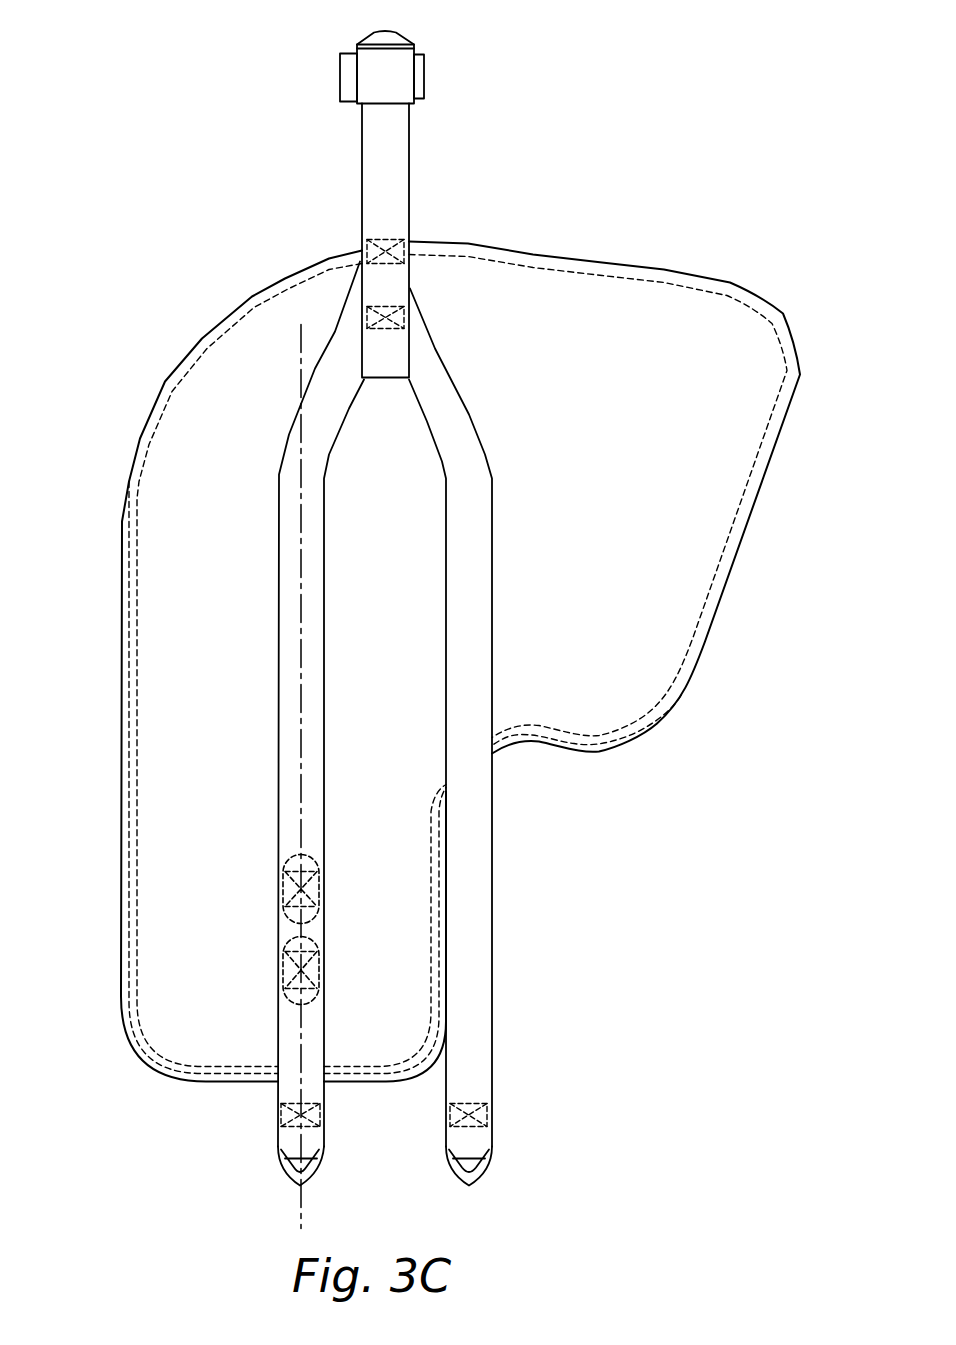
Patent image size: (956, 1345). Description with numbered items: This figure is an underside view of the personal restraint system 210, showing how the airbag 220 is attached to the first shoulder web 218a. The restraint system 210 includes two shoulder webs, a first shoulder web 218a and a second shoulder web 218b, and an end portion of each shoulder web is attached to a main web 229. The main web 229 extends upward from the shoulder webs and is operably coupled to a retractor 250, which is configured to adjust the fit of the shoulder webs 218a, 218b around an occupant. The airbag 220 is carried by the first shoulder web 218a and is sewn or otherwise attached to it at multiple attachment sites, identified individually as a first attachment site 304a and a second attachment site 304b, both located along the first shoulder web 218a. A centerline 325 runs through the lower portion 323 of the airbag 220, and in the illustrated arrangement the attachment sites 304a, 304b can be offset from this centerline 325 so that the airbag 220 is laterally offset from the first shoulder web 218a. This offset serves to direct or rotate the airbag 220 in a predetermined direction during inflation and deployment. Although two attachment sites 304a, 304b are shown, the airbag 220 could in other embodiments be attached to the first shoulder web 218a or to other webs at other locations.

The personal restraint system 210 is at (114, 227).
The retractor 250 is at (367, 60).
The main web 229 is at (365, 155).
The airbag 220 is at (606, 314).
The lower portion 323 is at (165, 972).
The centerline 325 is at (300, 560).
The first shoulder web 218a is at (282, 673).
The second shoulder web 218b is at (487, 929).
The first attachment site 304a is at (298, 968).
The second attachment site 304b is at (298, 888).